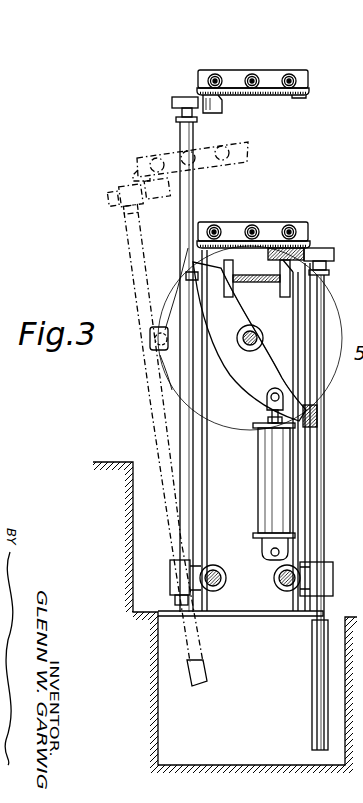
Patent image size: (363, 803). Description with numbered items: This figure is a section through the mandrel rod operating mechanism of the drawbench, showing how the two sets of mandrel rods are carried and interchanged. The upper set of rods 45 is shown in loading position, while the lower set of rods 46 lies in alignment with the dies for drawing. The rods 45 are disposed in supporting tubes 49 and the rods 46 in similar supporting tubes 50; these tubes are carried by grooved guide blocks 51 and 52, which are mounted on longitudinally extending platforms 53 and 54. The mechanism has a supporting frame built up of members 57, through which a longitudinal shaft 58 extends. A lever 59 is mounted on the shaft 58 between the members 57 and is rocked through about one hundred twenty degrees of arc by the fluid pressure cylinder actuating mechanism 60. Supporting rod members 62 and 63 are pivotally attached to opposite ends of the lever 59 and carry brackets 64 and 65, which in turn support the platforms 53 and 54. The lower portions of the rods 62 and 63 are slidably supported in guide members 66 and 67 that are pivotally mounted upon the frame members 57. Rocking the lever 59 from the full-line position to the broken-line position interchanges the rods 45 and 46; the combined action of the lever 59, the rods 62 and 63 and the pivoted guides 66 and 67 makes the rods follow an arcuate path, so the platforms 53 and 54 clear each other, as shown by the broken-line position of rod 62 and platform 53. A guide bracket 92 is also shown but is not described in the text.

The upper set of mandrel rods 45 is at (216, 75).
The supporting tubes 49 is at (248, 74).
The grooved guide block 51 is at (278, 88).
The platform 53 is at (300, 90).
The bracket 64 is at (224, 105).
The supporting rod member 62 is at (180, 133).
The lower set of mandrel rods 46 is at (222, 211).
The supporting tubes 50 is at (220, 228).
The grooved guide block 52 is at (268, 237).
The platform 54 is at (308, 248).
The bracket 65 is at (325, 285).
The guide bracket 92 is at (266, 262).
The lever 59 is at (249, 341).
The longitudinal shaft 58 is at (258, 333).
The frame members 57 is at (300, 356).
The fluid pressure cylinder actuating mechanism 60 is at (267, 480).
The supporting rod member 63 is at (327, 427).
The guide member 66 is at (172, 588).
The guide member 67 is at (308, 598).